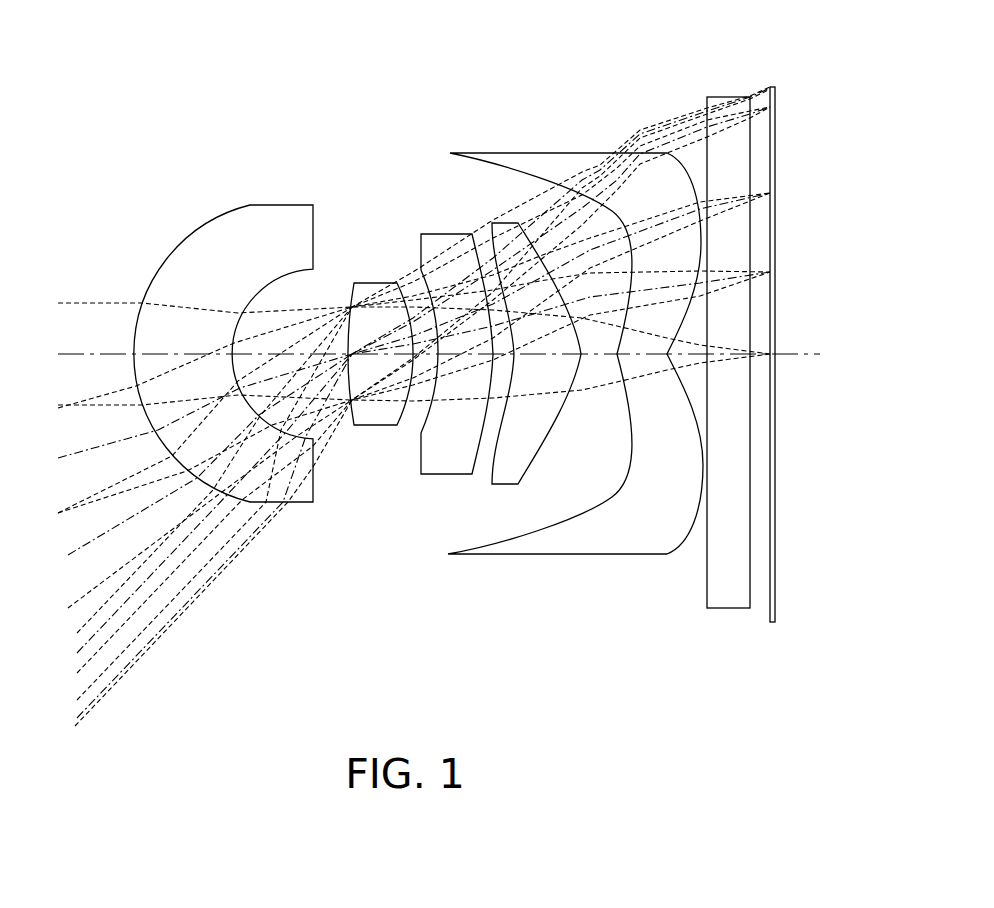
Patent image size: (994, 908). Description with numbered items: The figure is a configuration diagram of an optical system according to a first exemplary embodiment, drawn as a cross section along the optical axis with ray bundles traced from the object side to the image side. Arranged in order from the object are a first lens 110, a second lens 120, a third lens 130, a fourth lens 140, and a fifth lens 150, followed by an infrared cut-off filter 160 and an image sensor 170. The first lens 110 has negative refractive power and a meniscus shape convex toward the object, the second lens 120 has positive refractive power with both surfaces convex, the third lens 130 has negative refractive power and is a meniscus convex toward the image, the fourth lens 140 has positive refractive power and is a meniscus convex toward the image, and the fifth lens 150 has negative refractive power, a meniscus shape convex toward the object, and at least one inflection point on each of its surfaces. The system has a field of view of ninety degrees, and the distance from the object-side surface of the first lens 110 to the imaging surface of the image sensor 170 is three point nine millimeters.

The first lens 110 is at (283, 210).
The second lens 120 is at (370, 286).
The third lens 130 is at (445, 237).
The fourth lens 140 is at (503, 224).
The fifth lens 150 is at (600, 153).
The infrared cut-off filter 160 is at (722, 97).
The image sensor 170 is at (773, 87).